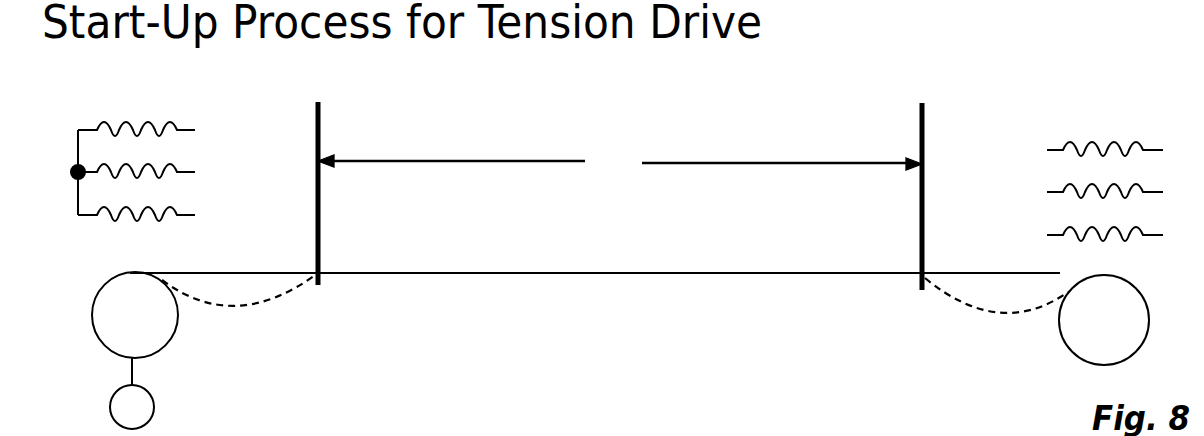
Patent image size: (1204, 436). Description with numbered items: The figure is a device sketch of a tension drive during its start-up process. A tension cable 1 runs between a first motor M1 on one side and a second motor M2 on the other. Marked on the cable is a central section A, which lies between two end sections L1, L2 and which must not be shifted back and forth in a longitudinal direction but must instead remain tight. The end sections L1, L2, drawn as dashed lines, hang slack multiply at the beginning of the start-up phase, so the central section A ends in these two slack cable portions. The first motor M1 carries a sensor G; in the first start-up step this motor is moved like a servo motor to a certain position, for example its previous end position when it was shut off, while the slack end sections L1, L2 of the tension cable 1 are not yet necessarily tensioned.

The central section A is at (620, 164).
The tension cable 1 is at (665, 273).
The end section L1 is at (252, 308).
The end section L2 is at (978, 305).
The first motor M1 is at (135, 315).
The second motor M2 is at (1104, 320).
The sensor G is at (132, 393).